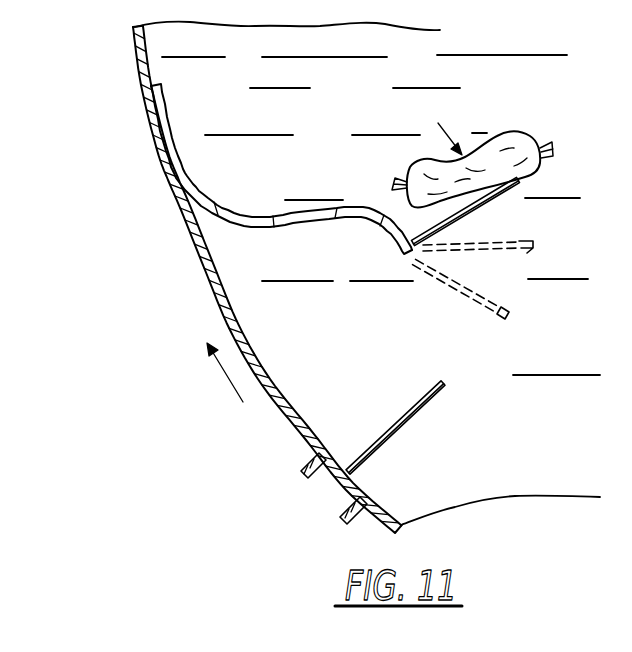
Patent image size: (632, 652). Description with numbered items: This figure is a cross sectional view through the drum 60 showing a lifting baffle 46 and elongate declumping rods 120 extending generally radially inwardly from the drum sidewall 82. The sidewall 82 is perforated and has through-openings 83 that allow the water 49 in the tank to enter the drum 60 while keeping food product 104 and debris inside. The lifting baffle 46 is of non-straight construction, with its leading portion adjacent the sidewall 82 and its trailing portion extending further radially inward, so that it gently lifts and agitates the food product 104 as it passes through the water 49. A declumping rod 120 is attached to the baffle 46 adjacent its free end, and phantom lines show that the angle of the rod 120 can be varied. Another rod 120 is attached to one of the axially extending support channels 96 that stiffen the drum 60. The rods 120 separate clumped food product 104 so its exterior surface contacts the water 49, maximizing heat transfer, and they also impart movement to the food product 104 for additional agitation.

The lifting baffle 46 is at (232, 234).
The water 49 is at (384, 348).
The drum 60 is at (163, 227).
The drum sidewall 82 is at (134, 56).
The through-openings 83 is at (133, 31).
The support channels 96 is at (310, 466).
The food product 104 is at (523, 147).
The declumping rods 120 is at (490, 204).